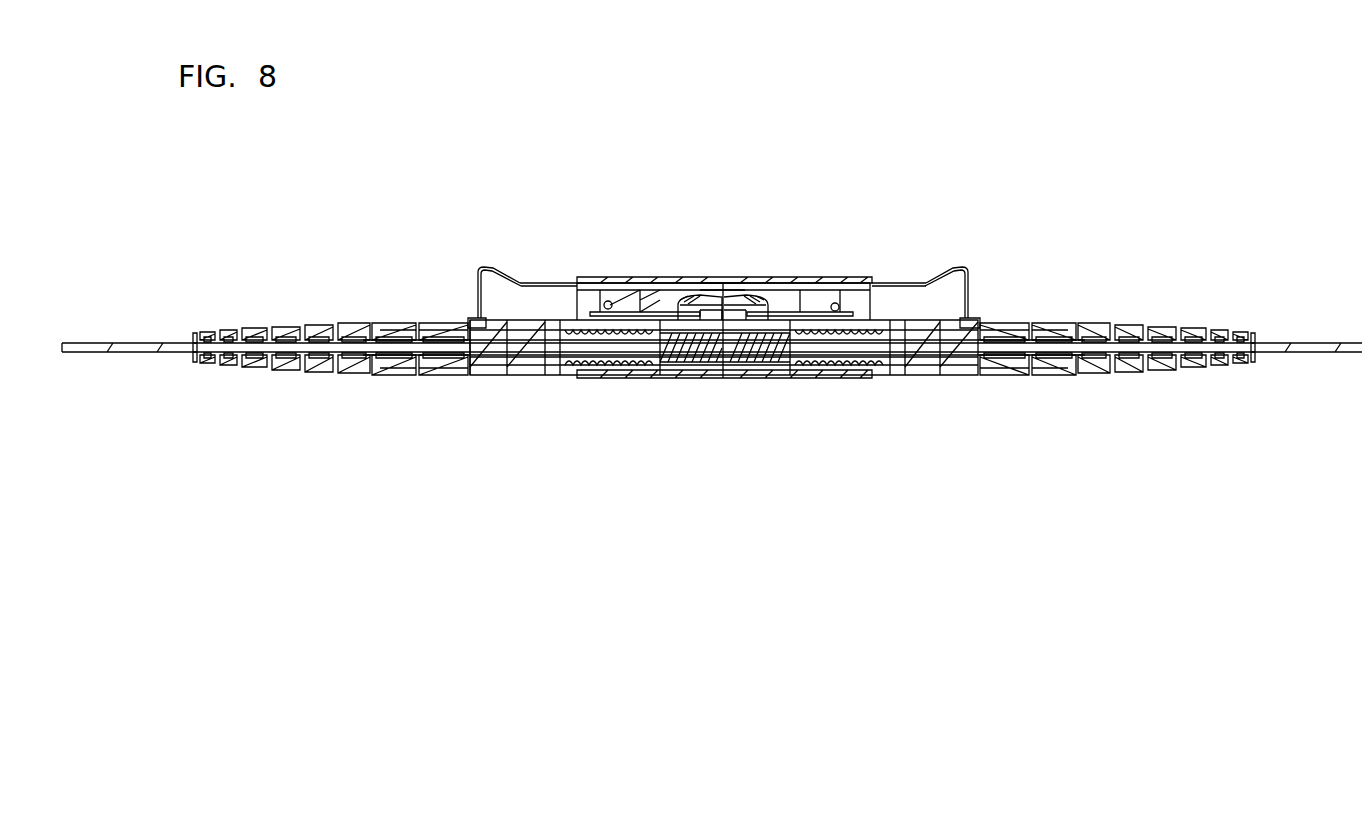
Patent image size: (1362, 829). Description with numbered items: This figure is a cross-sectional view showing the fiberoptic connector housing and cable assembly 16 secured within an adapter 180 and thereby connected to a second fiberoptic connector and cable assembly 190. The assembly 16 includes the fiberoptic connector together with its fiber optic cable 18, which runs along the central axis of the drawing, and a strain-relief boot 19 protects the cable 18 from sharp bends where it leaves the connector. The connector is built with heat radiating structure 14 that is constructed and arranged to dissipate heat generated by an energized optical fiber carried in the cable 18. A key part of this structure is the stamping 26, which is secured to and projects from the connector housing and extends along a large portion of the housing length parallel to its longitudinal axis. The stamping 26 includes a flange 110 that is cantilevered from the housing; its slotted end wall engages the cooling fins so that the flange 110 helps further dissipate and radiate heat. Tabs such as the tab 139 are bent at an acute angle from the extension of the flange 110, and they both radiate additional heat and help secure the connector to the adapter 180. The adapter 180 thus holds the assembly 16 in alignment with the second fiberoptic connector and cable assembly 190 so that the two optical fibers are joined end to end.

The heat radiating structure 14 is at (457, 292).
The fiberoptic connector housing and cable assembly 16 is at (508, 252).
The fiber optic cable 18 is at (135, 354).
The strain-relief boot 19 is at (358, 323).
The stamping 26 is at (539, 284).
The flange 110 is at (549, 287).
The tab 139 is at (590, 277).
The adapter 180 is at (702, 277).
The second fiberoptic connector and cable assembly 190 is at (922, 242).